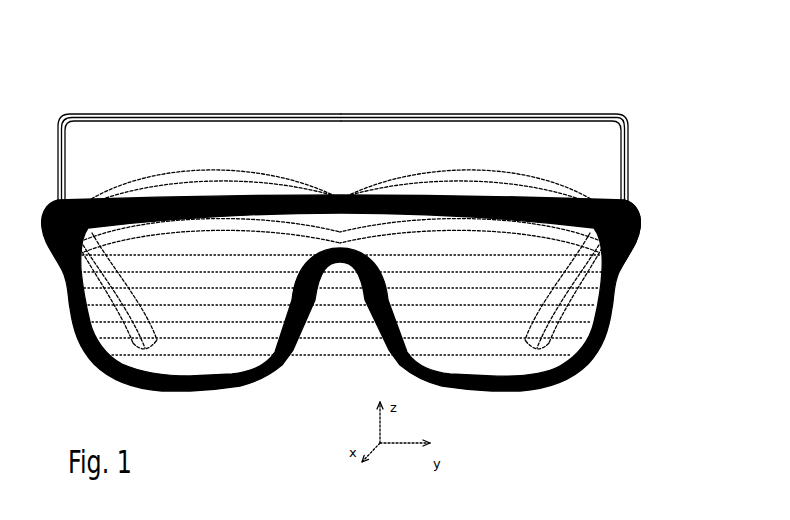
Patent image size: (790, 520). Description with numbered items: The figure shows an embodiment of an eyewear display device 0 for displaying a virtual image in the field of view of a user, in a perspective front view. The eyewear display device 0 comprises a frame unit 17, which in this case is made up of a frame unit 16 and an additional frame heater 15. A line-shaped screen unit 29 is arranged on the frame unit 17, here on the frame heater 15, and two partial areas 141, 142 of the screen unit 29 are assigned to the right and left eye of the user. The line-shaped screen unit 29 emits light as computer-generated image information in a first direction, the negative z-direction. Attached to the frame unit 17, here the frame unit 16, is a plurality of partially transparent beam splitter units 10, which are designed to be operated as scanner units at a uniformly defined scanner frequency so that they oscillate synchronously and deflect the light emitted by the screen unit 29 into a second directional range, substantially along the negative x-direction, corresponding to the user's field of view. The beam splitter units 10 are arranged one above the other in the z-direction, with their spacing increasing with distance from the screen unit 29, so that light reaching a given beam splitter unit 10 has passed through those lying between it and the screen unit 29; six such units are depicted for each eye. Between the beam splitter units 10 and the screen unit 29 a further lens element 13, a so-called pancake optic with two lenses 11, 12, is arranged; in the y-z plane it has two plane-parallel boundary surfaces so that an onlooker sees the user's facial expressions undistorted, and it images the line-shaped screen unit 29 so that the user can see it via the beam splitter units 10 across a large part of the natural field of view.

The eyewear display device 0 is at (374, 199).
The beam splitter unit 10 is at (625, 257).
The lens 11 is at (458, 226).
The lens 12 is at (537, 178).
The further lens element 13 is at (653, 172).
The additional frame heater 15 is at (359, 134).
The frame unit 16 is at (284, 366).
The frame unit 17 is at (340, 197).
The line-shaped screen unit 29 is at (359, 105).
The partial area 141 is at (307, 108).
The partial area 142 is at (590, 108).